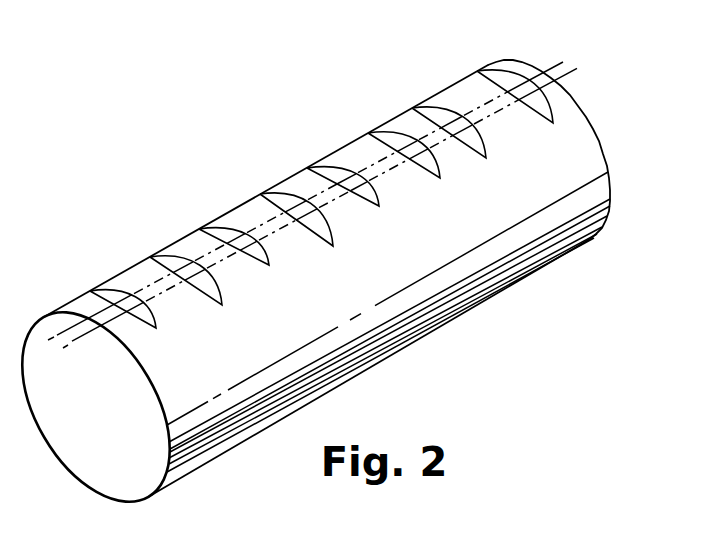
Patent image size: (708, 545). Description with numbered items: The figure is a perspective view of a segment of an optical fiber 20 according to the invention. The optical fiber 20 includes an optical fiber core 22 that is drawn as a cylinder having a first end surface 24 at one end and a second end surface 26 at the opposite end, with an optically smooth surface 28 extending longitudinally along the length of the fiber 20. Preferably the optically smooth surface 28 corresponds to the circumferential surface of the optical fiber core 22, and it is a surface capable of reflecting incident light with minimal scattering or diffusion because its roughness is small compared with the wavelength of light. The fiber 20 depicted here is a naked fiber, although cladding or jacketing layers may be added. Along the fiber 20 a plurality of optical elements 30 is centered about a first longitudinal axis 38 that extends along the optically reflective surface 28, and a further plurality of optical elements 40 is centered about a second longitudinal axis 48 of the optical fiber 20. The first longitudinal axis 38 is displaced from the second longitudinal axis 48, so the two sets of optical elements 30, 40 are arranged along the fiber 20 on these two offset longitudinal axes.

The optical fiber 20 is at (338, 268).
The optical fiber core 22 is at (238, 403).
The first end surface 24 is at (90, 455).
The second end surface 26 is at (597, 137).
The optically smooth surface 28 is at (578, 163).
The optical elements 30 is at (100, 298).
The first longitudinal axis 38 is at (548, 58).
The optical elements 40 is at (200, 299).
The second longitudinal axis 48 is at (560, 63).